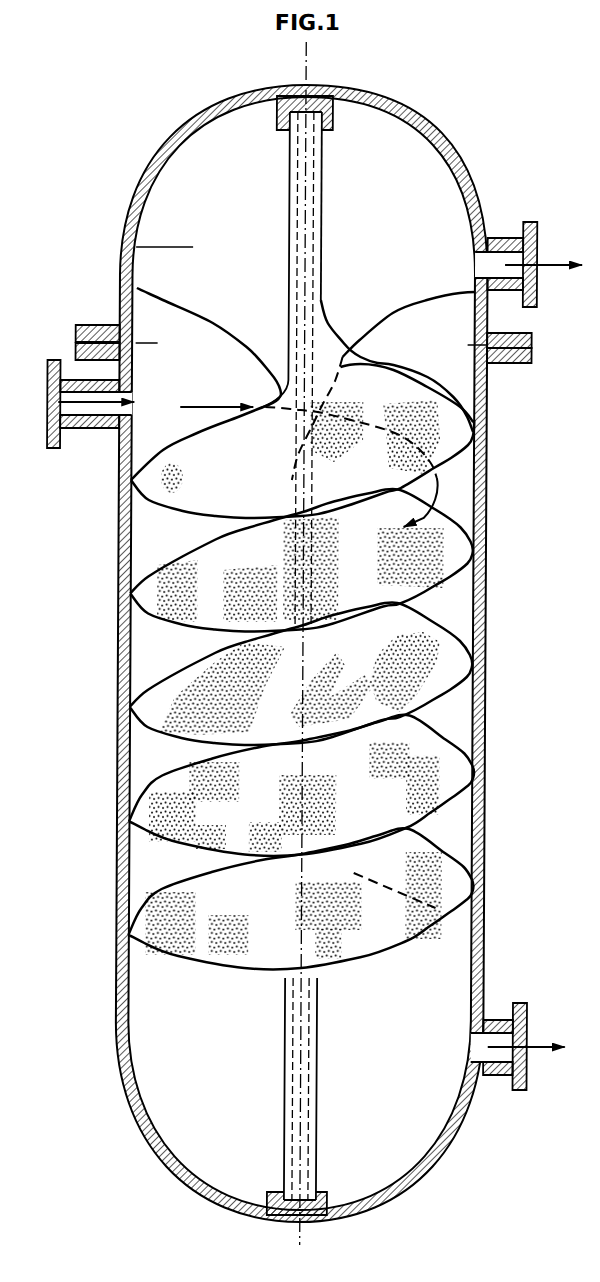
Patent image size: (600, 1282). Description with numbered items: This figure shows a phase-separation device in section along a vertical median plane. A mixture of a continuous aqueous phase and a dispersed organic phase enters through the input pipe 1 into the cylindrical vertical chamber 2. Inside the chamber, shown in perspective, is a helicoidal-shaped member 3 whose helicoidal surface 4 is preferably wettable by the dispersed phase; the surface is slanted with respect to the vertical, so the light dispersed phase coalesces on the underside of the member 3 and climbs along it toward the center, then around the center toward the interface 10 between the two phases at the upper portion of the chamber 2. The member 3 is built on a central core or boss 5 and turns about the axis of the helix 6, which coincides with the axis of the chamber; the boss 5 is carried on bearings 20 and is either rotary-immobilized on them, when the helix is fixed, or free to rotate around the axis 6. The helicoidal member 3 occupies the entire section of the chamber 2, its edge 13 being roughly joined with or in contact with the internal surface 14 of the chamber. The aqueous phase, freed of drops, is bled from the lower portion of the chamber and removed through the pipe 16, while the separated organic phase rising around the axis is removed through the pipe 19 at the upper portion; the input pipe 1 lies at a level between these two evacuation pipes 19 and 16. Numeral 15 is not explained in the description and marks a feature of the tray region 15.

The input pipe 1 is at (79, 408).
The cylindrical vertical chamber 2 is at (482, 615).
The helicoidal-shaped member 3 is at (337, 629).
The helicoidal surface 4 is at (417, 470).
The central core or boss 5 is at (289, 152).
The axis of the helix 6 is at (297, 52).
The interface between the two phases 10 is at (386, 304).
The edge of the helicoidal member 13 is at (450, 690).
The internal surface of the chamber 14 is at (470, 743).
The tray turn 15 is at (438, 952).
The pipe for removing the aqueous phase 16 is at (492, 1019).
The pipe for removing the organic phase 19 is at (497, 237).
The bearings 20 is at (329, 118).